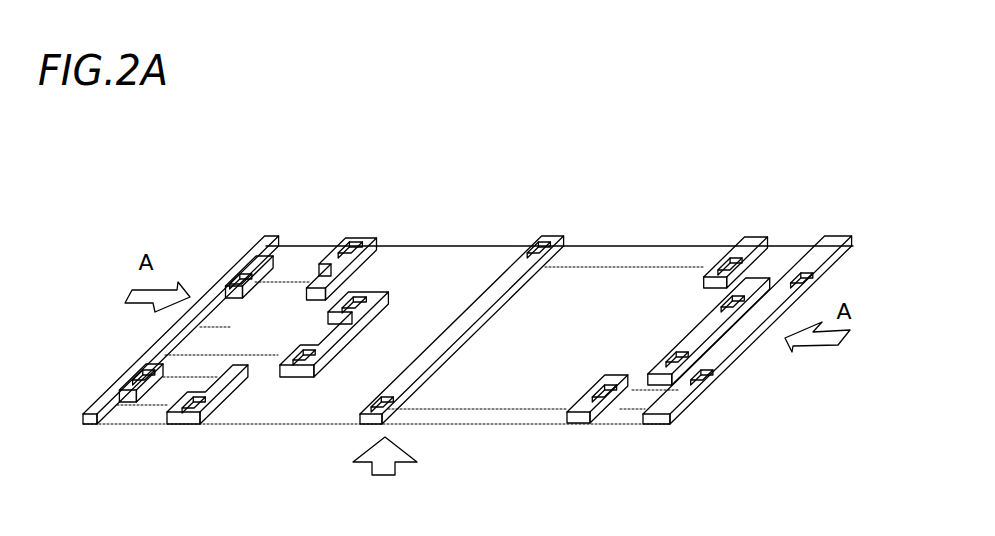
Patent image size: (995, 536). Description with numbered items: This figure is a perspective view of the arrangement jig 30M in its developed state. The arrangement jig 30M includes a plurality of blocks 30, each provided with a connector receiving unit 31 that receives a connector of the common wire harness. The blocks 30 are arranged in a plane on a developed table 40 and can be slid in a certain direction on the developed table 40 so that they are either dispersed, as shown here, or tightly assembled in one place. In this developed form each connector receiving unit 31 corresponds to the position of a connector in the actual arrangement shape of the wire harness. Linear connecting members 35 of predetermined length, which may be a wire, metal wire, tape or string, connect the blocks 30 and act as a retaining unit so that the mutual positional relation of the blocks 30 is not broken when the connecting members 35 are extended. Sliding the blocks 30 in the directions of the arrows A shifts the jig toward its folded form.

The arrangement jig 30M is at (619, 208).
The block 30 is at (357, 240).
The connector receiving unit 31 is at (357, 246).
The linear connecting member 35 is at (301, 282).
The developed table 40 is at (486, 247).